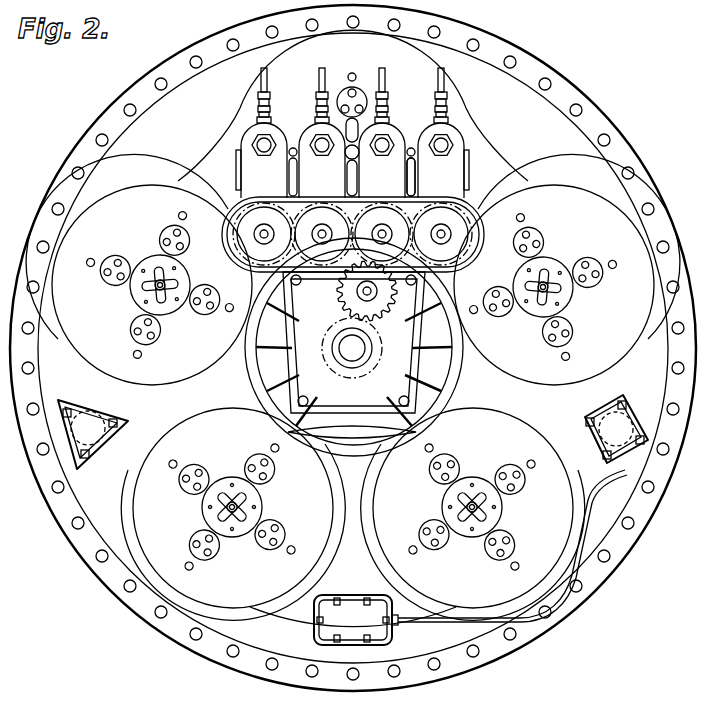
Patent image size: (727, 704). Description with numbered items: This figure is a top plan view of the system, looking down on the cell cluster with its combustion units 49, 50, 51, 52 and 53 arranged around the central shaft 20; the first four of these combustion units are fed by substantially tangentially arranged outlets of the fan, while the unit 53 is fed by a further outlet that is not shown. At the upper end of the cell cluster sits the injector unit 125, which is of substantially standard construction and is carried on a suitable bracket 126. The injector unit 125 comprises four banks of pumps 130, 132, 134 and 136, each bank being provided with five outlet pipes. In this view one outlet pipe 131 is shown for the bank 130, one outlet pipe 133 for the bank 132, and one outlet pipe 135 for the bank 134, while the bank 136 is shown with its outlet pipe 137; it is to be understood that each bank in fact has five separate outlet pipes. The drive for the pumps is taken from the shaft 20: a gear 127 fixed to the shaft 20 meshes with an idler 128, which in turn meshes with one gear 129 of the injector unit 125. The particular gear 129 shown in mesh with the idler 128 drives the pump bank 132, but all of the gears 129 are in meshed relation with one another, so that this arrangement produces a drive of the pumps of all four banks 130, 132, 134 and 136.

The shaft 20 is at (352, 356).
The combustion unit 49 is at (563, 269).
The combustion unit 50 is at (409, 145).
The combustion unit 51 is at (141, 269).
The combustion unit 52 is at (233, 509).
The combustion unit 53 is at (473, 509).
The injector unit 125 is at (472, 150).
The bracket 126 is at (414, 373).
The gear 127 is at (371, 366).
The idler 128 is at (367, 291).
The gear of the injector unit 129 is at (353, 234).
The pump bank 130 is at (443, 160).
The outlet pipe 131 is at (448, 92).
The pump bank 132 is at (382, 160).
The outlet pipe 133 is at (385, 88).
The pump bank 134 is at (322, 160).
The outlet pipe 135 is at (324, 80).
The pump bank 136 is at (261, 160).
The outlet pipe 137 is at (259, 85).